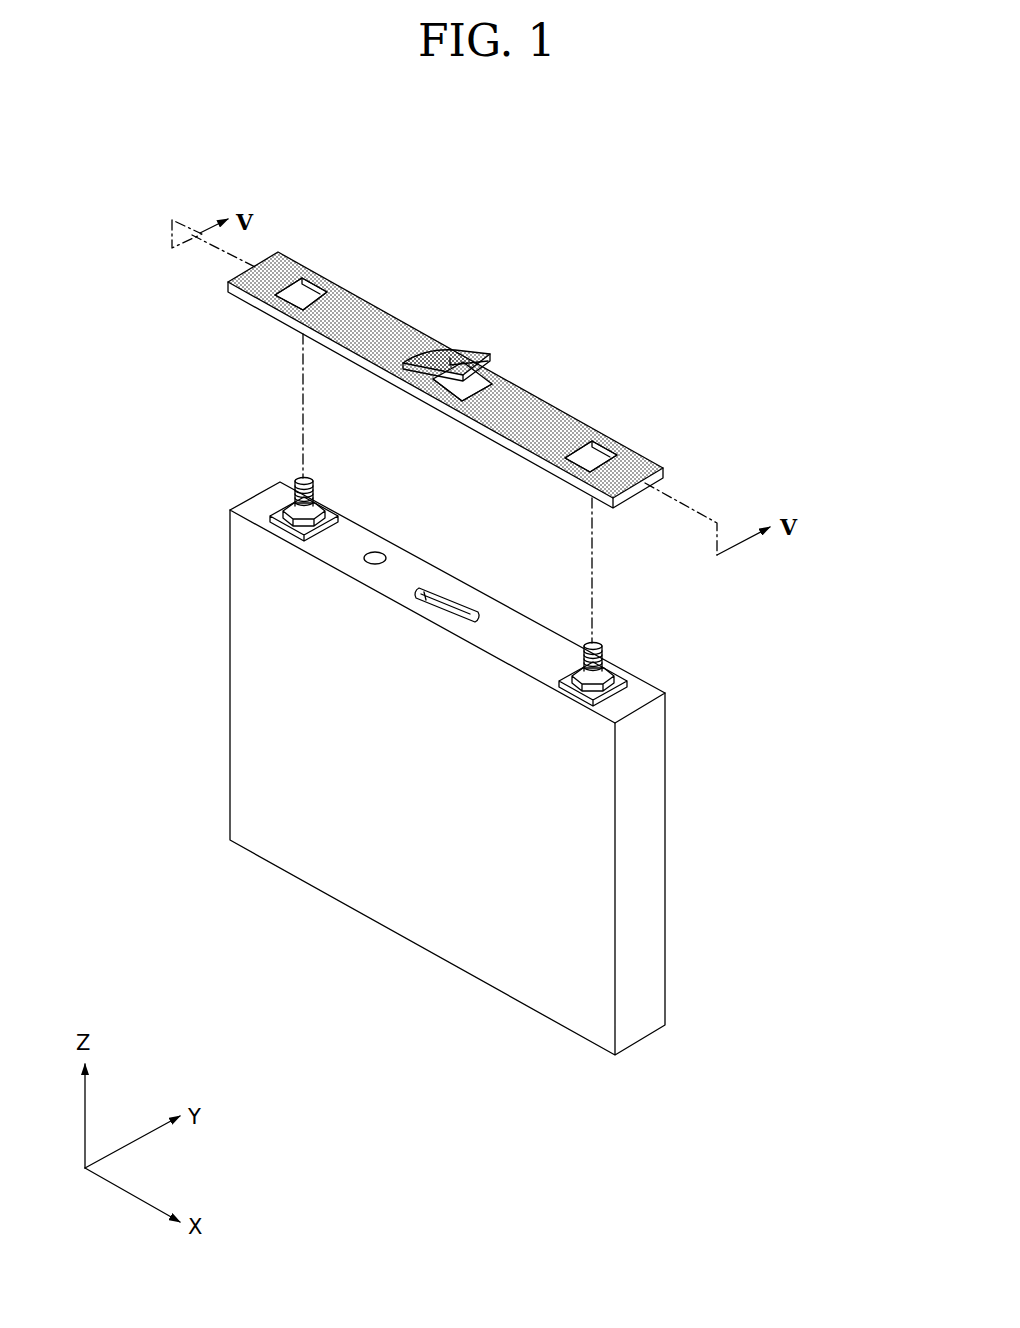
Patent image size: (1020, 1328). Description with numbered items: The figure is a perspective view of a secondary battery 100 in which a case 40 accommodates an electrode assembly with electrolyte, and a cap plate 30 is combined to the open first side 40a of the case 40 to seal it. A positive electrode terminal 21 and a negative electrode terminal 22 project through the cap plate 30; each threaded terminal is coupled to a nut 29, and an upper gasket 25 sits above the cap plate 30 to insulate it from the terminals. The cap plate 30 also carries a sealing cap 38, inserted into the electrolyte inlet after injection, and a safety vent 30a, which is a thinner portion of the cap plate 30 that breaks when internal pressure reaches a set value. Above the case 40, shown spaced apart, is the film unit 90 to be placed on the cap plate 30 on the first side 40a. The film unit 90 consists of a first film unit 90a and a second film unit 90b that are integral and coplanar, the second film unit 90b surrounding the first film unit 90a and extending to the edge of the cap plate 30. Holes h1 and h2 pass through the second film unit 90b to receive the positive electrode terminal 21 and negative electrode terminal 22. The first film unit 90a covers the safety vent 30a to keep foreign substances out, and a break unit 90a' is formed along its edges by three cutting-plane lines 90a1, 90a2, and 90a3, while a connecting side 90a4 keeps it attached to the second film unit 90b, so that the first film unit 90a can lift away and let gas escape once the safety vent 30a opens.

The secondary battery 100 is at (749, 301).
The film unit 90 is at (668, 442).
The first film unit 90a is at (453, 303).
The break unit 90a' is at (513, 342).
The cutting-plane line 90a1 is at (477, 354).
The cutting-plane line 90a2 is at (492, 363).
The cutting-plane line 90a3 is at (440, 382).
The connecting side 90a4 is at (422, 357).
The second film unit 90b is at (383, 318).
The hole h1 is at (306, 290).
The hole h2 is at (597, 456).
The positive electrode terminal 21 is at (302, 482).
The negative electrode terminal 22 is at (597, 646).
The nut 29 is at (602, 668).
The upper gasket 25 is at (626, 683).
The cap plate 30 is at (408, 567).
The safety vent 30a is at (455, 603).
The sealing cap 38 is at (375, 556).
The case 40 is at (412, 915).
The first side 40a is at (228, 517).